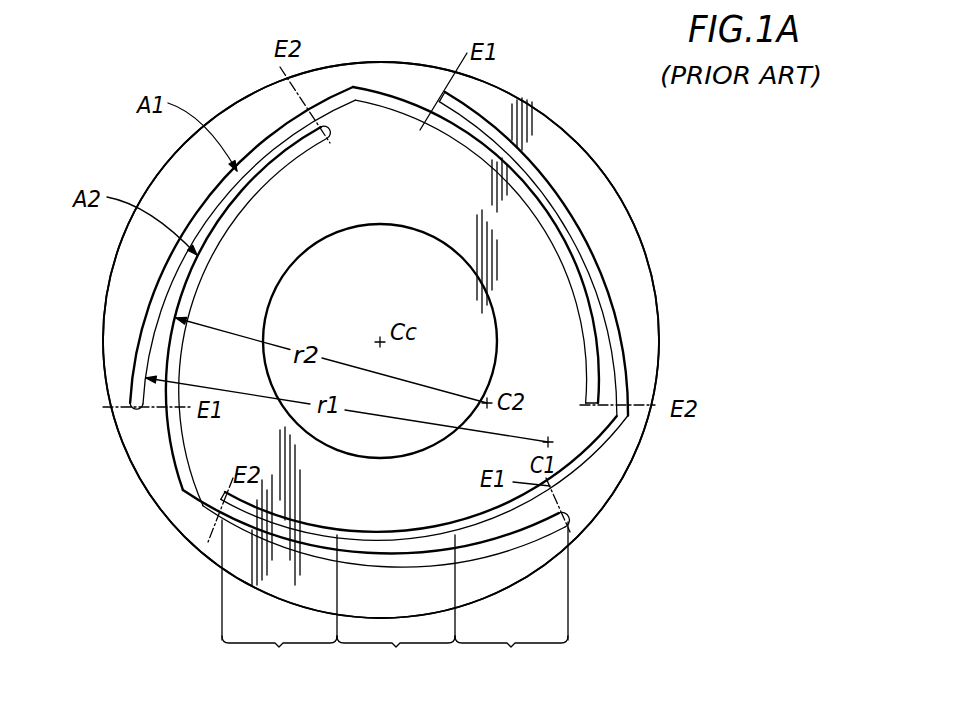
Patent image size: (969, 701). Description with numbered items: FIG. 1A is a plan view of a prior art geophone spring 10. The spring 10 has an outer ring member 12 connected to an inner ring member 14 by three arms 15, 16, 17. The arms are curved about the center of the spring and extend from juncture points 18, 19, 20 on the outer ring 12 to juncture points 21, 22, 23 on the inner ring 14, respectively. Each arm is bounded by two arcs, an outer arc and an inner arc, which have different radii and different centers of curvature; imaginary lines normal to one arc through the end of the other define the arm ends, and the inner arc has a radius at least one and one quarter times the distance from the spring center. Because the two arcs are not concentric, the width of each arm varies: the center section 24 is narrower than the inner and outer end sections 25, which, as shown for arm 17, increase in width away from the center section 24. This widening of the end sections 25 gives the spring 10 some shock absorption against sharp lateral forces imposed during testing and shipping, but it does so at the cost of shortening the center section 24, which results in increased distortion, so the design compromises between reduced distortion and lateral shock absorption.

The geophone spring 10 is at (638, 221).
The outer ring member 12 is at (615, 468).
The inner ring member 14 is at (391, 196).
The arm 15 is at (490, 143).
The arm 16 is at (150, 389).
The arm 17 is at (520, 530).
The juncture point 18 is at (152, 410).
The juncture point 19 is at (440, 117).
The juncture point 20 is at (543, 508).
The juncture point 21 is at (297, 130).
The juncture point 22 is at (607, 392).
The juncture point 23 is at (237, 513).
The center section 24 is at (396, 606).
The end sections 25 is at (395, 599).